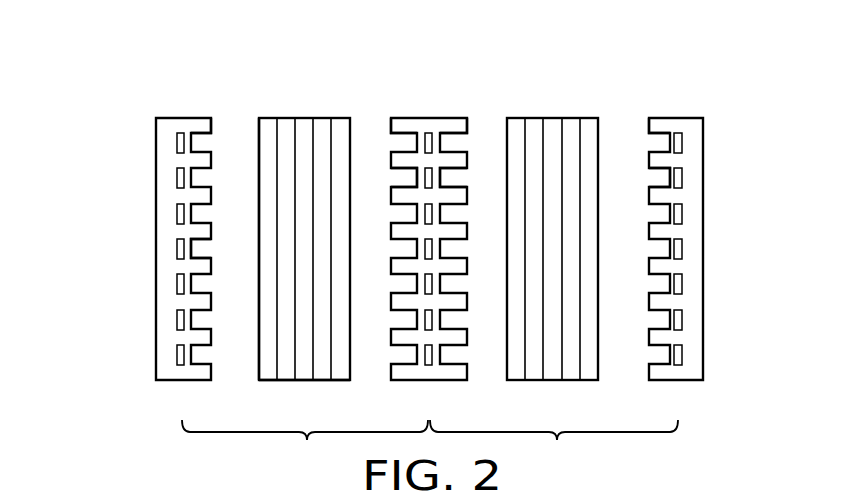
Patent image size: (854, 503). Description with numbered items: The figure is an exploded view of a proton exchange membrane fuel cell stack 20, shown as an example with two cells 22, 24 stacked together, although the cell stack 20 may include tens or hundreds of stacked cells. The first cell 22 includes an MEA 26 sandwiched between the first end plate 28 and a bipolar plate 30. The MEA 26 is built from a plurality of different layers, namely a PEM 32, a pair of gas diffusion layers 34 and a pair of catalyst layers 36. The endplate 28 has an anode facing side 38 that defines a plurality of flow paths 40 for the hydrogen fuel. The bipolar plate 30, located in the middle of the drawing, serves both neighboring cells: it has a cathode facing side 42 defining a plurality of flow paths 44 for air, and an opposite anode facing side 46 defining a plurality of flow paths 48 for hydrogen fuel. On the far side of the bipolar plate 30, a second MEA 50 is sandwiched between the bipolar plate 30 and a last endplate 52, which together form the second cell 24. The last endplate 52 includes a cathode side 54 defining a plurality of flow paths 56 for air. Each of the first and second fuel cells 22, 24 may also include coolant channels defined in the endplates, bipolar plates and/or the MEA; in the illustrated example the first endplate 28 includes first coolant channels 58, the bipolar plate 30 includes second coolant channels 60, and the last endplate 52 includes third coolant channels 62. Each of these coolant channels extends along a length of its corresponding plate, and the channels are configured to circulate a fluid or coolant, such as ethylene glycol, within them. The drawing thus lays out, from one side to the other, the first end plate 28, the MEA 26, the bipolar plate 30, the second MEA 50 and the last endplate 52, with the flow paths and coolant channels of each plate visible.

The fuel cell stack 20 is at (172, 32).
The first cell 22 is at (305, 445).
The second cell 24 is at (554, 445).
The MEA 26 is at (290, 229).
The first end plate 28 is at (170, 118).
The bipolar plate 30 is at (403, 118).
The PEM 32 is at (304, 125).
The gas diffusion layers 34 is at (259, 253).
The catalyst layers 36 is at (287, 381).
The anode facing side 38 is at (211, 128).
The flow paths 40 is at (214, 249).
The cathode facing side 42 is at (391, 128).
The flow paths 44 is at (388, 178).
The anode facing side 46 is at (467, 128).
The flow paths 48 is at (468, 178).
The second MEA 50 is at (600, 80).
The last endplate 52 is at (692, 118).
The cathode side 54 is at (649, 128).
The flow paths 56 is at (640, 181).
The first coolant channels 58 is at (177, 322).
The second coolant channels 60 is at (432, 320).
The third coolant channels 62 is at (682, 320).